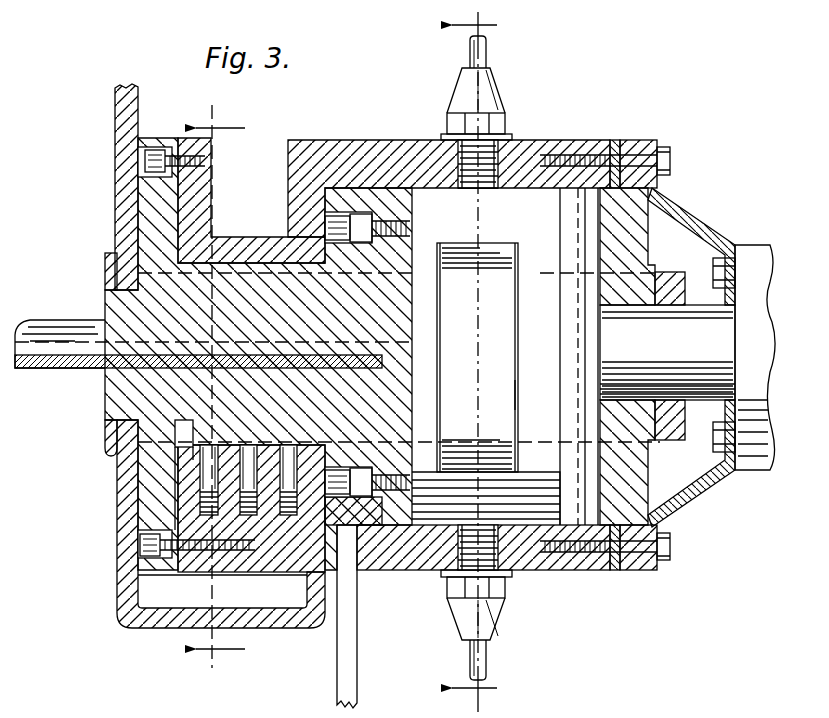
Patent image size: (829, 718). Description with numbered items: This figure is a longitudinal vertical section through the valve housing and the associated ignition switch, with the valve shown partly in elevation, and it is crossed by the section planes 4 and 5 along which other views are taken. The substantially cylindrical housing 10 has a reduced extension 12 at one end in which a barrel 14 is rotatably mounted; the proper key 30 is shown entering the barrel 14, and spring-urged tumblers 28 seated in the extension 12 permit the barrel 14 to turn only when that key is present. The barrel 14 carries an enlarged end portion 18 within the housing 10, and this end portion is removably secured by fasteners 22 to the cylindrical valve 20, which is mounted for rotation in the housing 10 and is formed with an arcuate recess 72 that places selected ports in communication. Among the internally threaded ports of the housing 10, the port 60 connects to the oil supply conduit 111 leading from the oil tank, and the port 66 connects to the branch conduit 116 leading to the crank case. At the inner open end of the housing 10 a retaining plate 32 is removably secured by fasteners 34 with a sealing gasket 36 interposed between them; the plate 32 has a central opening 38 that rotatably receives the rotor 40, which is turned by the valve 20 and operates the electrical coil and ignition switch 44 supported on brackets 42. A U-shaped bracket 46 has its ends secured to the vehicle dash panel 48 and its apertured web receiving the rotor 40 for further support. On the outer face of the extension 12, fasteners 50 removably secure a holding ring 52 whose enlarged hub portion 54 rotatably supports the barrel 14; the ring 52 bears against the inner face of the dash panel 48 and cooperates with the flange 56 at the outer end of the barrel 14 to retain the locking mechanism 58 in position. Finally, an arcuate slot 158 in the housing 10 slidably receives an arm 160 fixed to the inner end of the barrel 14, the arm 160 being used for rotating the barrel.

The section line 4- 4 is at (484, 362).
The section line 5- 5 is at (220, 386).
The housing 10 is at (543, 150).
The reduced extension 12 is at (259, 237).
The barrel 14 is at (110, 420).
The enlarged end portion 18 is at (372, 500).
The cylindrical valve 20 is at (505, 356).
The fasteners 22 is at (402, 236).
The tumblers 28 is at (328, 522).
The key 30 is at (80, 308).
The retaining plate 32 is at (634, 148).
The fasteners 34 is at (668, 170).
The sealing gasket 36 is at (614, 140).
The central opening 38 is at (600, 392).
The rotor 40 is at (722, 364).
The brackets 42 is at (682, 505).
The electrical coil and ignition switch 44 is at (752, 262).
The U-shaped bracket 46 is at (660, 282).
The vehicle dash panel 48 is at (147, 630).
The fasteners 50 is at (158, 150).
The holding ring 52 is at (140, 210).
The enlarged hub portion 54 is at (176, 440).
The flange 56 is at (107, 455).
The locking mechanism 58 is at (196, 580).
The port 60 is at (460, 152).
The port 66 is at (498, 566).
The arcuate recess 72 is at (508, 387).
The oil supply conduit 111 is at (486, 62).
The branch conduit 116 is at (488, 664).
The arcuate slot 158 is at (364, 572).
The arm 160 is at (347, 676).